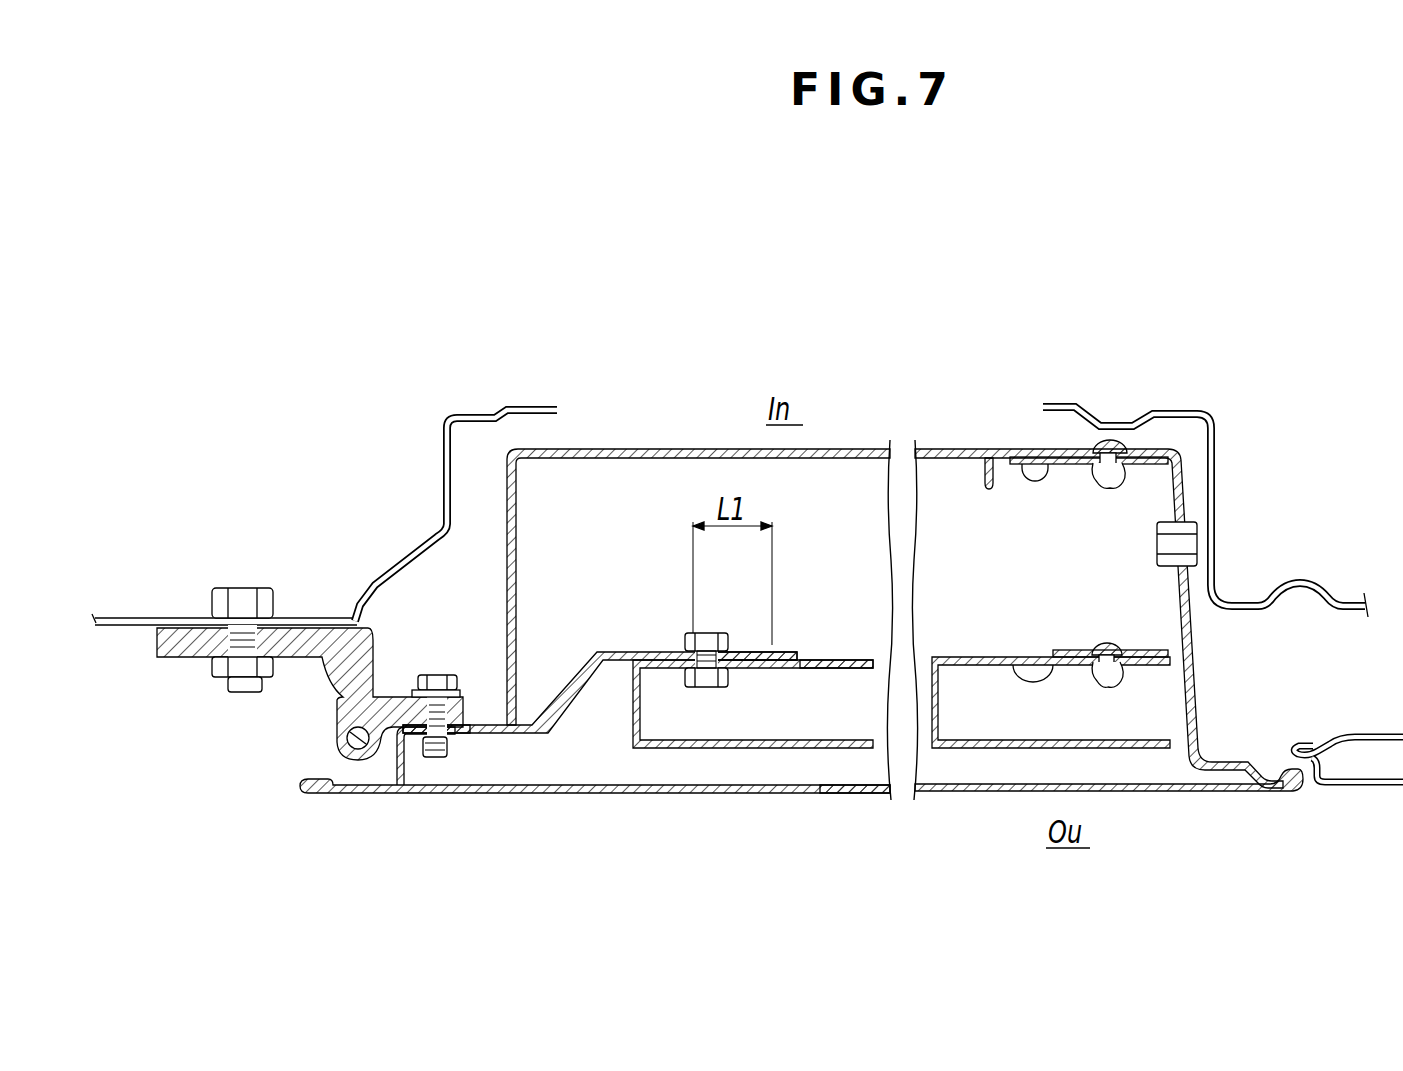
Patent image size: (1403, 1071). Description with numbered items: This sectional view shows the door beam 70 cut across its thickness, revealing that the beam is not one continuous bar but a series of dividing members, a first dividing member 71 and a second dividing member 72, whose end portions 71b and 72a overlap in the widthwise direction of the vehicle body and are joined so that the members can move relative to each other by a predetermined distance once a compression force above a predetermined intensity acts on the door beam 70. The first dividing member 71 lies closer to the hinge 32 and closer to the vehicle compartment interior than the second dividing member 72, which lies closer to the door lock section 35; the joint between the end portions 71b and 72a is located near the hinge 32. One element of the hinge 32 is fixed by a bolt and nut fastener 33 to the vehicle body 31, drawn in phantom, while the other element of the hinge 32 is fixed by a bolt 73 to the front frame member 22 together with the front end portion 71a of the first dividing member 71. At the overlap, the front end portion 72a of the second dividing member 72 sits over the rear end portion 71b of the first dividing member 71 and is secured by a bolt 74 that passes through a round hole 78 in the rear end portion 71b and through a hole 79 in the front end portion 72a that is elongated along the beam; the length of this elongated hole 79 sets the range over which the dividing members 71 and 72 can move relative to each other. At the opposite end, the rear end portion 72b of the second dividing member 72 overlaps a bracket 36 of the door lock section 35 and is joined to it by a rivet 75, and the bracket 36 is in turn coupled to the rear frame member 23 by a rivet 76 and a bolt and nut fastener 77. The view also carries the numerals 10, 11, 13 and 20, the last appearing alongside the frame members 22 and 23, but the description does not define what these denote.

The vehicle body structure 10 is at (722, 275).
The floor panel 11 is at (538, 442).
The floor under panel 13 is at (840, 795).
The cross member 20 is at (849, 618).
The front frame member 22 is at (505, 583).
The rear frame member 23 is at (1199, 682).
The vehicle body 31 is at (126, 636).
The hinge 32 is at (325, 672).
The bolt and nut fastener 33 is at (218, 680).
The door lock section 35 is at (1055, 555).
The bracket 36 is at (1018, 457).
The door beam 70 is at (654, 790).
The first dividing member 71 is at (563, 706).
The front end portion of first dividing member 71a is at (475, 740).
The rear end portion of first dividing member 71b is at (790, 650).
The second dividing member 72 is at (800, 752).
The front end portion of second dividing member 72a is at (815, 660).
The rear end portion of second dividing member 72b is at (1012, 680).
The bolt 73 is at (428, 757).
The bolt 74 is at (685, 650).
The rivet 75 is at (1104, 645).
The rivet 76 is at (1107, 445).
The bolt and nut fastener 77 is at (1195, 540).
The round hole 78 is at (702, 655).
The elongated hole 79 is at (763, 665).